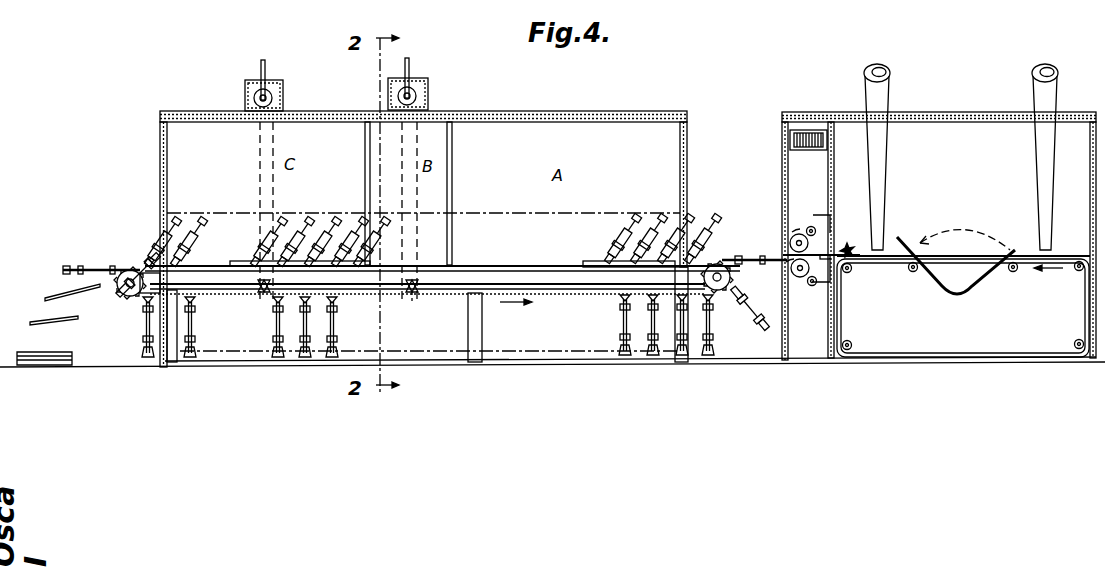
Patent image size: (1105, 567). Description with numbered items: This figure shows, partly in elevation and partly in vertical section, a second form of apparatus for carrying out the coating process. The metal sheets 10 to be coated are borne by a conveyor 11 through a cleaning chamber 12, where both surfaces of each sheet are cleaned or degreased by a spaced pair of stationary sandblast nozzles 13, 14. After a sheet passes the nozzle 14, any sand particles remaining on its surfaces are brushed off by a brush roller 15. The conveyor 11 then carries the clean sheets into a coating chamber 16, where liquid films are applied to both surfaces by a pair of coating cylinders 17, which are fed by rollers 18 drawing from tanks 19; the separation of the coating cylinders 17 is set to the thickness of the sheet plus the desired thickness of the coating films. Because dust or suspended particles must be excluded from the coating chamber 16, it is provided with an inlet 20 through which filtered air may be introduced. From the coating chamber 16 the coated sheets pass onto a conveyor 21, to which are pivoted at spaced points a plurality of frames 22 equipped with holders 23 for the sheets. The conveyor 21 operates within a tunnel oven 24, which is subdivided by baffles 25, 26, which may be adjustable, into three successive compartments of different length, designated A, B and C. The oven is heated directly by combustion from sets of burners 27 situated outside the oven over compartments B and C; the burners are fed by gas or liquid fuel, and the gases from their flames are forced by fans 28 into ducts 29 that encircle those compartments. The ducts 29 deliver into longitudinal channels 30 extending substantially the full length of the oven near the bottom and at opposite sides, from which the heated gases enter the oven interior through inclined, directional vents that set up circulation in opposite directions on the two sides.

The metal sheets 10 is at (38, 352).
The conveyor 11 is at (1085, 288).
The cleaning chamber 12 is at (1090, 188).
The sandblast nozzle 13 is at (1040, 213).
The sandblast nozzle 14 is at (887, 228).
The brush roller 15 is at (848, 243).
The coating chamber 16 is at (782, 180).
The coating cylinders 17 is at (790, 241).
The rollers 18 is at (808, 226).
The tanks 19 is at (820, 214).
The inlet 20 is at (810, 129).
The conveyor 21 is at (240, 264).
The frames 22 is at (146, 327).
The holders 23 is at (192, 312).
The tunnel oven 24 is at (190, 112).
The baffle 25 is at (452, 170).
The baffle 26 is at (365, 158).
The burners 27 is at (261, 70).
The fans 28 is at (283, 88).
The ducts 29 is at (259, 187).
The longitudinal channels 30 is at (263, 294).